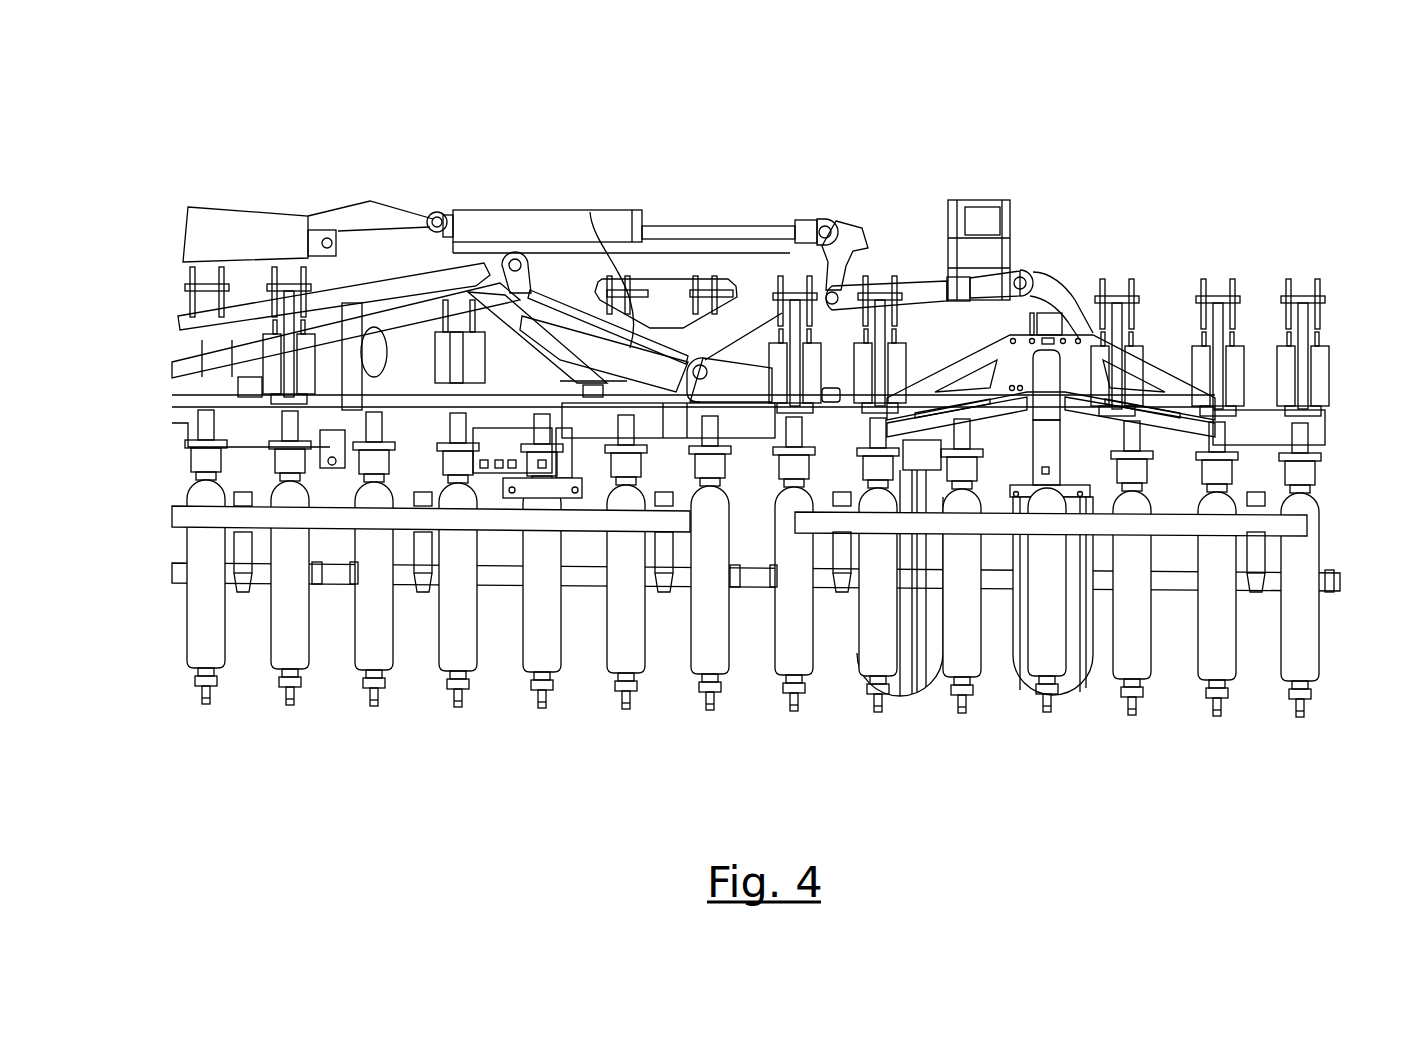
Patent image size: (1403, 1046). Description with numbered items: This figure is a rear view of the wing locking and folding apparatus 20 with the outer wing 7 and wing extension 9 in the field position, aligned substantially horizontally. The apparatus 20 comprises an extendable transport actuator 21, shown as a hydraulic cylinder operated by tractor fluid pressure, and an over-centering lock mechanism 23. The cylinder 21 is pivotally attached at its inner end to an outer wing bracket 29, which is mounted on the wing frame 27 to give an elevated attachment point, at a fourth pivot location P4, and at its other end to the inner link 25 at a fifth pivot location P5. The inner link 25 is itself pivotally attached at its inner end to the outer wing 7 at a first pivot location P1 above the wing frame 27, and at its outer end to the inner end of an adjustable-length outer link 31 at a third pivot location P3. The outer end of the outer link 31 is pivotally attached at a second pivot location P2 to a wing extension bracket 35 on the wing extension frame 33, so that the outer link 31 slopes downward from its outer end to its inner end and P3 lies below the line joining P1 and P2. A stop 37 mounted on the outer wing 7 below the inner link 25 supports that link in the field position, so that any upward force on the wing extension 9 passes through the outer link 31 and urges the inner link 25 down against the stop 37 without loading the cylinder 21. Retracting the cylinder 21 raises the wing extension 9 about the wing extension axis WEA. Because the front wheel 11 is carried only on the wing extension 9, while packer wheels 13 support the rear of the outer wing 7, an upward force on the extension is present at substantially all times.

The outer wing 7 is at (418, 705).
The wing extension 9 is at (1003, 717).
The front wheel 11 is at (900, 697).
The packer wheel 13 is at (1322, 652).
The wing locking and folding apparatus 20 is at (843, 122).
The transport actuator 21 is at (527, 210).
The lock mechanism 23 is at (877, 206).
The inner link 25 is at (683, 220).
The wing frame 27 is at (567, 498).
The outer wing bracket 29 is at (370, 203).
The outer link 31 is at (922, 282).
The wing extension frame 33 is at (1173, 445).
The wing extension bracket 35 is at (1063, 285).
The stop 37 is at (590, 212).
The first pivot location P1 is at (512, 258).
The second pivot location P2 is at (1025, 278).
The third pivot location P3 is at (798, 222).
The fourth pivot location P4 is at (432, 216).
The fifth pivot location P5 is at (827, 220).
The wing extension axis WEA is at (704, 364).